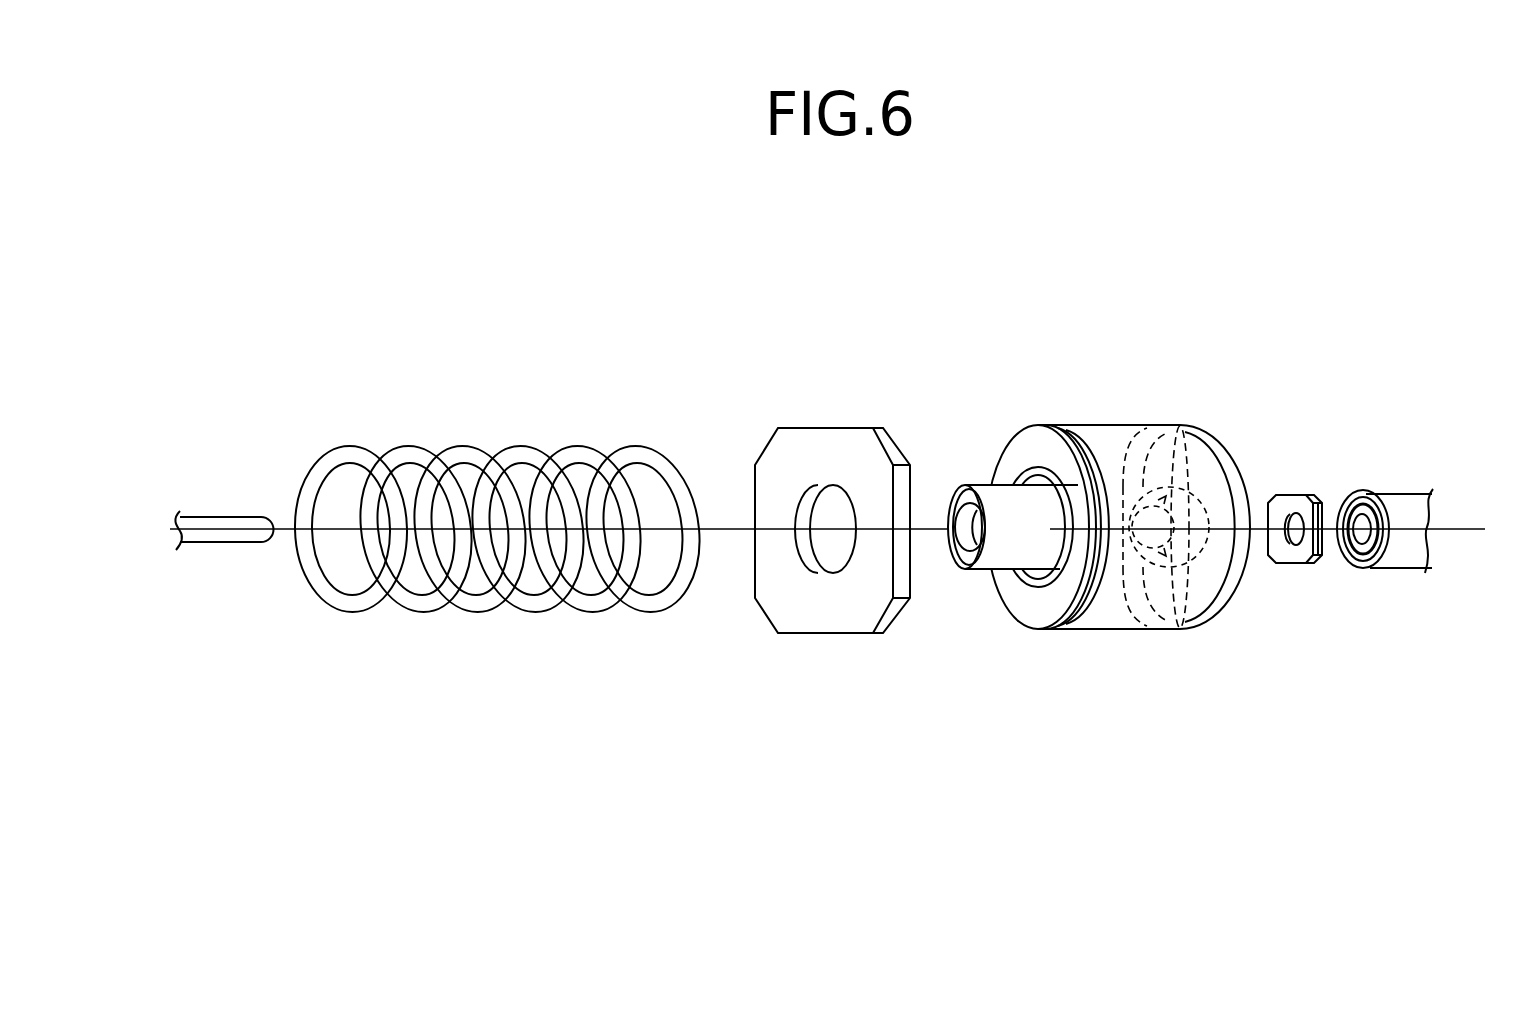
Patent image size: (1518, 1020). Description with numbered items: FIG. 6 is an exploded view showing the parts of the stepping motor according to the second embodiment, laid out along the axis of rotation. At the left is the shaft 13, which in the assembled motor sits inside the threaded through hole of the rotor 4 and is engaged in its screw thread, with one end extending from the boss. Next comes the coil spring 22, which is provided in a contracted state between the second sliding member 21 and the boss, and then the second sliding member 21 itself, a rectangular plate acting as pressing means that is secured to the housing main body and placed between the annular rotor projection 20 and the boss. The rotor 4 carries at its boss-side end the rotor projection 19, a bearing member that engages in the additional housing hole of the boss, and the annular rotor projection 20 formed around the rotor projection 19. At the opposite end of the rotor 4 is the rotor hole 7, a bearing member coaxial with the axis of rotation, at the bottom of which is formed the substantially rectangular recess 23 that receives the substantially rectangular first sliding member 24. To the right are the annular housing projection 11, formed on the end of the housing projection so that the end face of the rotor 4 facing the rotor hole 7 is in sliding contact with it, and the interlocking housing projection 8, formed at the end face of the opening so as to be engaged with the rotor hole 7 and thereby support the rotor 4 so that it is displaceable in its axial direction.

The shaft 13 is at (217, 517).
The coil spring 22 is at (565, 447).
The second sliding member 21 is at (827, 428).
The rotor 4 is at (1099, 526).
The annular rotor projection 20 is at (1029, 467).
The rotor projection 19 is at (1003, 607).
The recess 23 is at (1180, 424).
The rotor hole 7 is at (1178, 632).
The first sliding member 24 is at (1298, 564).
The annular housing projection 11 is at (1366, 493).
The interlocking housing projection 8 is at (1385, 536).